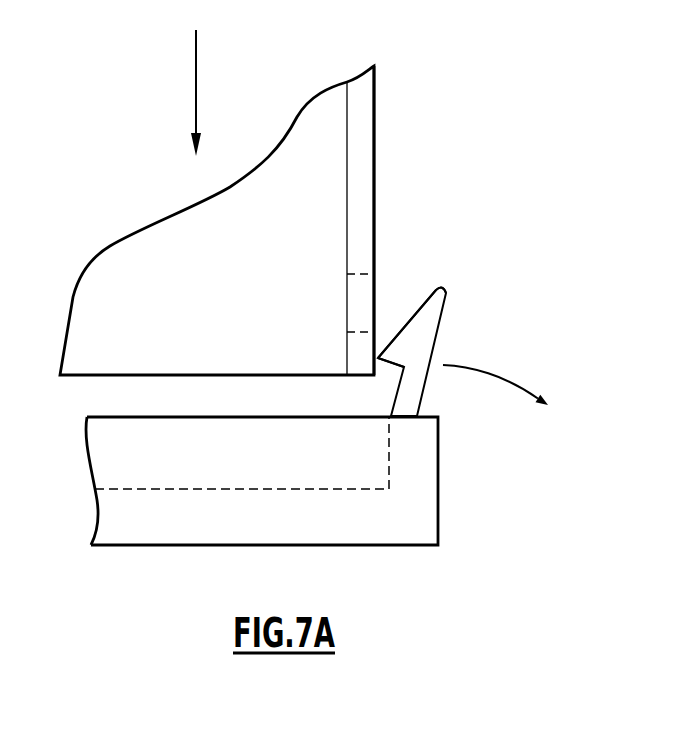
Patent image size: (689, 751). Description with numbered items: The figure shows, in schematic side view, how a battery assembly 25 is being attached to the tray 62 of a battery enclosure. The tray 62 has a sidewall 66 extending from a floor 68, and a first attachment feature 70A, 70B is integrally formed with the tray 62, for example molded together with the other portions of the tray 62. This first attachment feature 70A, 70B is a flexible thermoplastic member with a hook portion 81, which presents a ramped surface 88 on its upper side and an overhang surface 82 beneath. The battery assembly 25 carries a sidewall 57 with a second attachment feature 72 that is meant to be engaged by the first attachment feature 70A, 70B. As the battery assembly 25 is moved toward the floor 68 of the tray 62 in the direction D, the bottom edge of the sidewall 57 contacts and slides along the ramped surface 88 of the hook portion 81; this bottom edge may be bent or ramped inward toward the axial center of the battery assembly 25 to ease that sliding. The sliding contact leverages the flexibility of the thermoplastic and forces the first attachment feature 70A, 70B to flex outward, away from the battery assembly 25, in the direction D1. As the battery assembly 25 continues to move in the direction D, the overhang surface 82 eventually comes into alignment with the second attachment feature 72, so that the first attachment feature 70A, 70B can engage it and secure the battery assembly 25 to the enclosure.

The battery assembly 25 is at (153, 257).
The sidewall 57 is at (363, 127).
The second attachment feature 72 is at (324, 303).
The first attachment feature 70A is at (485, 352).
The first attachment feature 70B is at (434, 339).
The ramped surface 88 is at (408, 322).
The hook portion 81 is at (437, 308).
The overhang surface 82 is at (388, 366).
The tray 62 is at (348, 545).
The sidewall 66 is at (110, 458).
The floor 68 is at (173, 489).
The direction D is at (200, 78).
The direction D1 is at (478, 368).